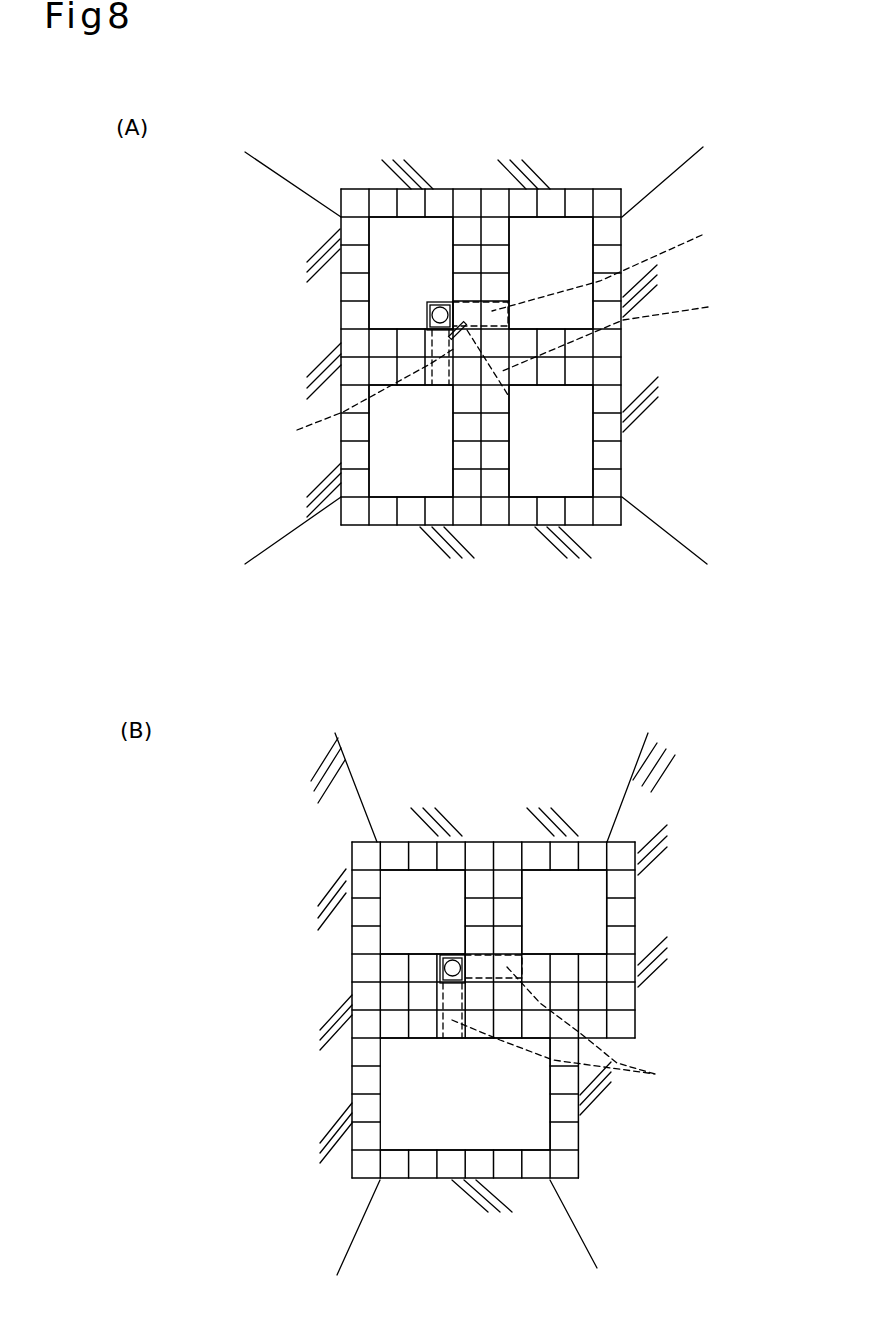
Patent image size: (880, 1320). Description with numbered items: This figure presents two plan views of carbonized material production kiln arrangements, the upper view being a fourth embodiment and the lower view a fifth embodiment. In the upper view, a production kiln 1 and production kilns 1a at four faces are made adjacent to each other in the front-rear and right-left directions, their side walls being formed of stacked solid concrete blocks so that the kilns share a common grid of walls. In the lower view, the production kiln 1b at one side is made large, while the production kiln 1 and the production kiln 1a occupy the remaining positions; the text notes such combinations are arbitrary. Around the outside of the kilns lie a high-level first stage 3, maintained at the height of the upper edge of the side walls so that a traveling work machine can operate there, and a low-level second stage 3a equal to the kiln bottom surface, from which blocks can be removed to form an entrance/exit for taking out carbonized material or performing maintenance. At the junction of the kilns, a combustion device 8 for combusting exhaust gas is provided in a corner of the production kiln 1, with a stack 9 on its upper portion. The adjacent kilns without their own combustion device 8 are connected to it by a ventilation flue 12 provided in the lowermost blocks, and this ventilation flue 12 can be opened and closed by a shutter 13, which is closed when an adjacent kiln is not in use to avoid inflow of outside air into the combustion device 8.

The carbonized material production kiln 1 is at (425, 230).
The second production kiln 1a is at (577, 232).
The large production kiln 1b is at (519, 1132).
The first stage 3 is at (497, 124).
The second stage 3a is at (268, 339).
The combustion device 8 is at (428, 302).
The stack 9 is at (427, 314).
The ventilation flue 12 is at (504, 657).
The shutter 13 is at (462, 320).